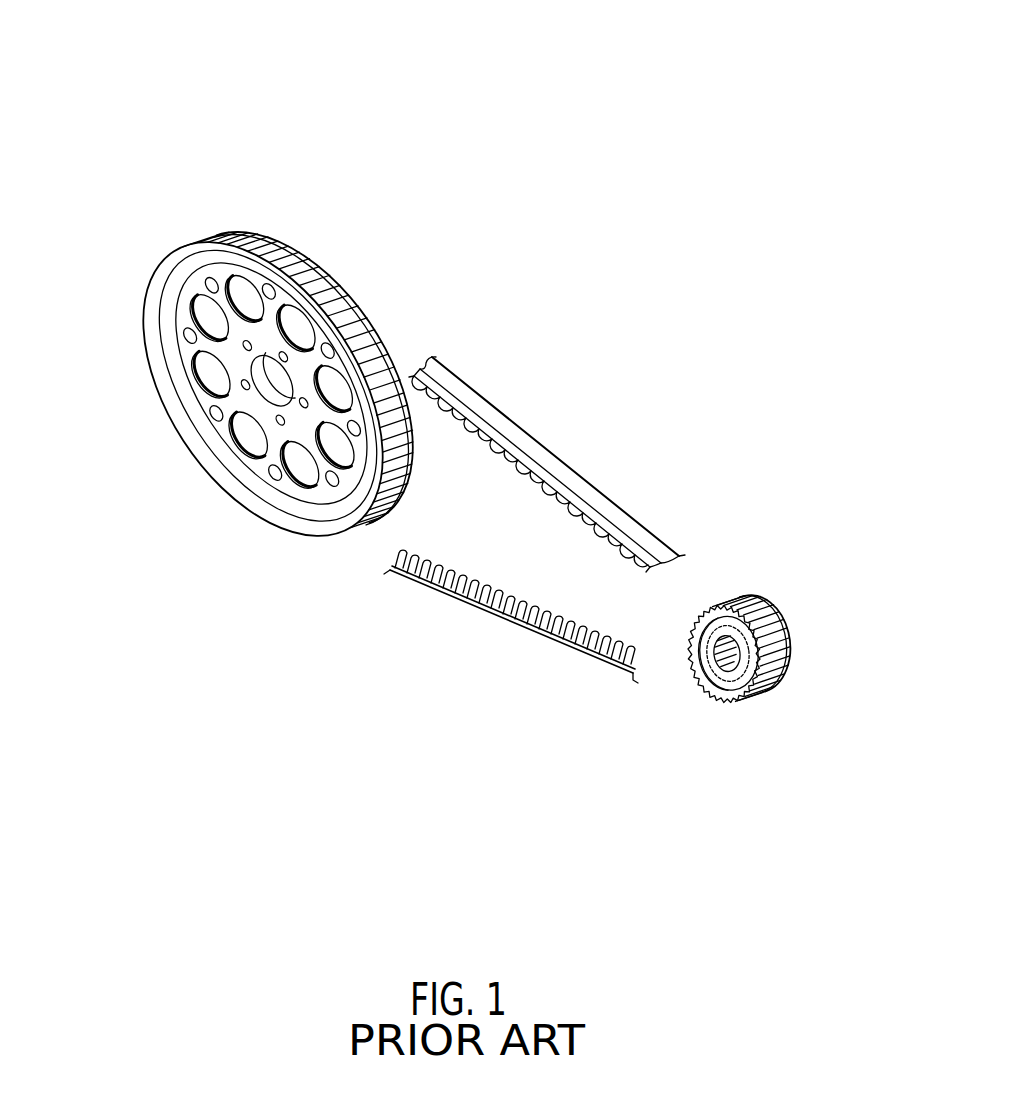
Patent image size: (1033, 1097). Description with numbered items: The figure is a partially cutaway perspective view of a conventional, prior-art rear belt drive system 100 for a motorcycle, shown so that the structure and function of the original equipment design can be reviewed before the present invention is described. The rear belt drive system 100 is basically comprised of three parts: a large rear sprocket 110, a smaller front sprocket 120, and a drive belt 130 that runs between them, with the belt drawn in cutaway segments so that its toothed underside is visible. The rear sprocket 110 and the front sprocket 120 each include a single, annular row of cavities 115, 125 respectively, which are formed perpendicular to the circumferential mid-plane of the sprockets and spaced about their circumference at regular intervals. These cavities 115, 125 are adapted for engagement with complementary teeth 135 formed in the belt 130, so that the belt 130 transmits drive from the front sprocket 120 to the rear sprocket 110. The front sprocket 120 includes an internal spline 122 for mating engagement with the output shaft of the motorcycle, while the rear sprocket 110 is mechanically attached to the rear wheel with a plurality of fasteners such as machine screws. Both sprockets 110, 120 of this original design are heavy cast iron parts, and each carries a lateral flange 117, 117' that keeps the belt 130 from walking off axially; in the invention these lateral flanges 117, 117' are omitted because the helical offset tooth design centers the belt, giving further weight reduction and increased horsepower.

The rear belt drive system 100 is at (367, 103).
The rear sprocket 110 is at (187, 207).
The cavities 115 is at (302, 267).
The lateral flange 117 is at (261, 389).
The lateral flange 117' is at (828, 641).
The front sprocket 120 is at (754, 576).
The internal spline 122 is at (725, 665).
The cavities 125 is at (775, 628).
The drive belt 130 is at (556, 427).
The teeth 135 is at (583, 520).